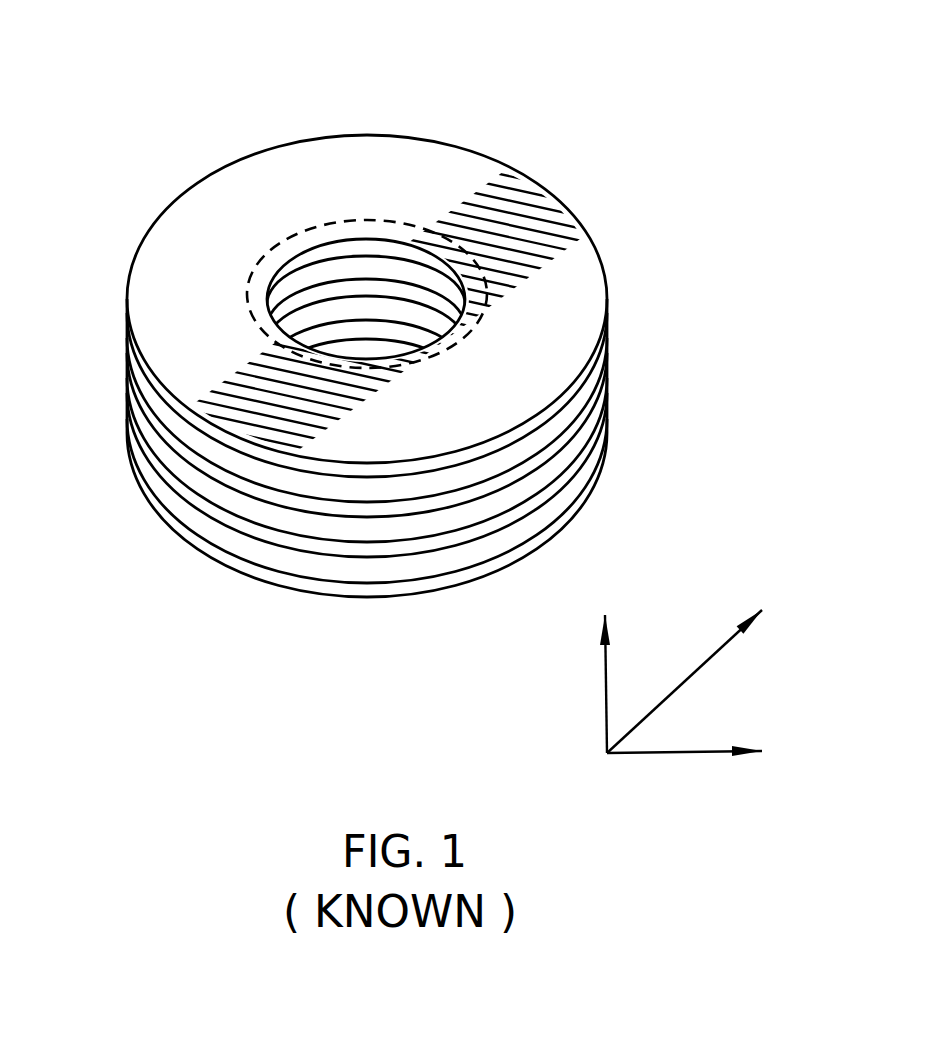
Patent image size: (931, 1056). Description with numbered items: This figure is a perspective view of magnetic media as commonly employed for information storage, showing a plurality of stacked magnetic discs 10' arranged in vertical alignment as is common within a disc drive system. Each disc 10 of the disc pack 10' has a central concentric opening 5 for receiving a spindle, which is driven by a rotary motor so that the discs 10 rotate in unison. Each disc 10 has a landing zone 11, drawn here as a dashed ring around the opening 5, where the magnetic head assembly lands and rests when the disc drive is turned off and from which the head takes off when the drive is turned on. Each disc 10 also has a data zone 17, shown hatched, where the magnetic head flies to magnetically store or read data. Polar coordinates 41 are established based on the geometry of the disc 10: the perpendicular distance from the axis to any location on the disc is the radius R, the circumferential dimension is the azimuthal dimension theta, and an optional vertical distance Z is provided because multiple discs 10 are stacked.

The stacked magnetic discs 10' is at (367, 305).
The magnetic disc 10 is at (400, 418).
The central concentric opening 5 is at (375, 281).
The landing zone 11 is at (250, 283).
The data zone 17 is at (190, 364).
The polar coordinates 41 is at (606, 689).